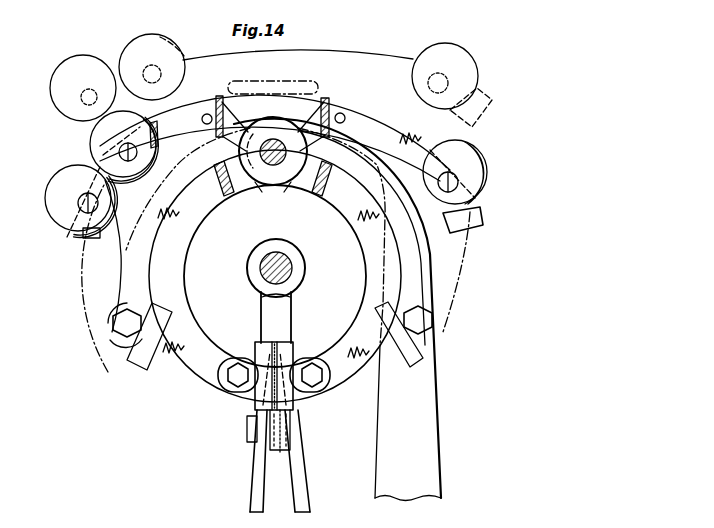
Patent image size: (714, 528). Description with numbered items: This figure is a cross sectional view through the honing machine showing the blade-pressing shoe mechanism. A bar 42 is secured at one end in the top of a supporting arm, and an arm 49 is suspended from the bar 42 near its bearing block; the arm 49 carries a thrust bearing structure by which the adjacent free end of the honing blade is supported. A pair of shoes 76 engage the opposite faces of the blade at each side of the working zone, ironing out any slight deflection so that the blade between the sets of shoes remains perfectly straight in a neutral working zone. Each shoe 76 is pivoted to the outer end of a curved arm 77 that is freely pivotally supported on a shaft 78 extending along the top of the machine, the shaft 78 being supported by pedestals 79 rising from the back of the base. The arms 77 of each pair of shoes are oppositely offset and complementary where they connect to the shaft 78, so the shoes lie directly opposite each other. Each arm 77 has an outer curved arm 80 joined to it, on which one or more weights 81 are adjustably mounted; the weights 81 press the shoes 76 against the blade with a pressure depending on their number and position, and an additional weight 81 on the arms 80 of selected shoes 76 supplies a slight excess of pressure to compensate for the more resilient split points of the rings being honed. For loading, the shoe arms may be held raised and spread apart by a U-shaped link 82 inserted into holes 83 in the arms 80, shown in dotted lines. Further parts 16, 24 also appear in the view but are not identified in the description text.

The legs 16 is at (306, 484).
The arm 24 is at (292, 341).
The bar 42 is at (290, 258).
The arm 49 is at (258, 304).
The shoes 76 is at (258, 350).
The curved arm 77 is at (185, 275).
The shaft 78 is at (272, 190).
The pedestals 79 is at (423, 440).
The outer curved arm 80 is at (190, 64).
The weights 81 is at (118, 60).
The U-shaped link 82 is at (280, 78).
The holes 83 is at (208, 114).